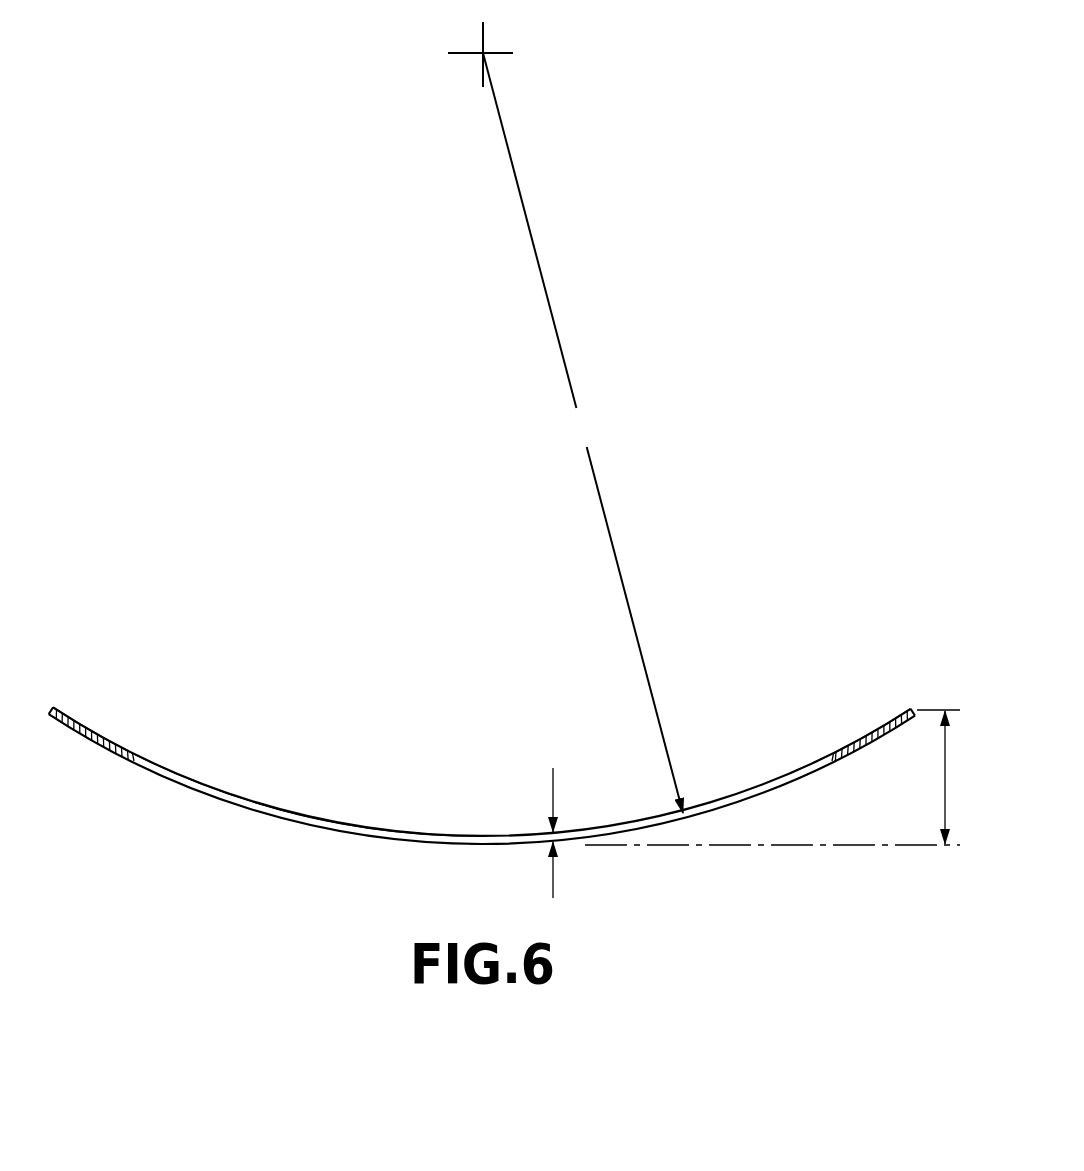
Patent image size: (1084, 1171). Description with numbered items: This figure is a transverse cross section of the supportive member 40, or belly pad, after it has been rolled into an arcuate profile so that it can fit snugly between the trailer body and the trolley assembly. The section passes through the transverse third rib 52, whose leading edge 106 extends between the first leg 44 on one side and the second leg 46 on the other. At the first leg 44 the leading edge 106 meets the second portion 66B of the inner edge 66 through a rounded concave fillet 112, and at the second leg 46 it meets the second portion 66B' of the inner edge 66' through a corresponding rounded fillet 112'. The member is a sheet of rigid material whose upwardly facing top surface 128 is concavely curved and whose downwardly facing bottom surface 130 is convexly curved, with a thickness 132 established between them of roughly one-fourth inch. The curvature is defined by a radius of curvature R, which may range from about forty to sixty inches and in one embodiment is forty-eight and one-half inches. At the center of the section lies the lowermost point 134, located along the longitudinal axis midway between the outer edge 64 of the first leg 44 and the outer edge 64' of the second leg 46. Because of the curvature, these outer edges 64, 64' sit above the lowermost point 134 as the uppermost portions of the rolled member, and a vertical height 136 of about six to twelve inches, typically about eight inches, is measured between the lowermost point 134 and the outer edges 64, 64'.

The supportive member 40 is at (480, 764).
The first leg 44 is at (96, 726).
The second leg 46 is at (869, 727).
The transverse third rib 52 is at (442, 832).
The outer edge of first leg 64 is at (57, 666).
The outer edge of second leg 64' is at (900, 666).
The inner edge of first leg 66 is at (154, 714).
The second portion of inner edge 66B is at (154, 714).
The inner edge of second leg 66' is at (791, 712).
The second portion of inner edge of second leg 66B' is at (791, 712).
The leading edge of third rib 106 is at (375, 832).
The rounded concave fillet 112 is at (157, 793).
The rounded fillet 112' is at (800, 792).
The top surface 128 is at (297, 815).
The bottom surface 130 is at (270, 816).
The panel thickness 132 is at (553, 782).
The lowermost point 134 is at (483, 847).
The vertical height 136 is at (945, 782).
The radius of curvature R is at (583, 433).